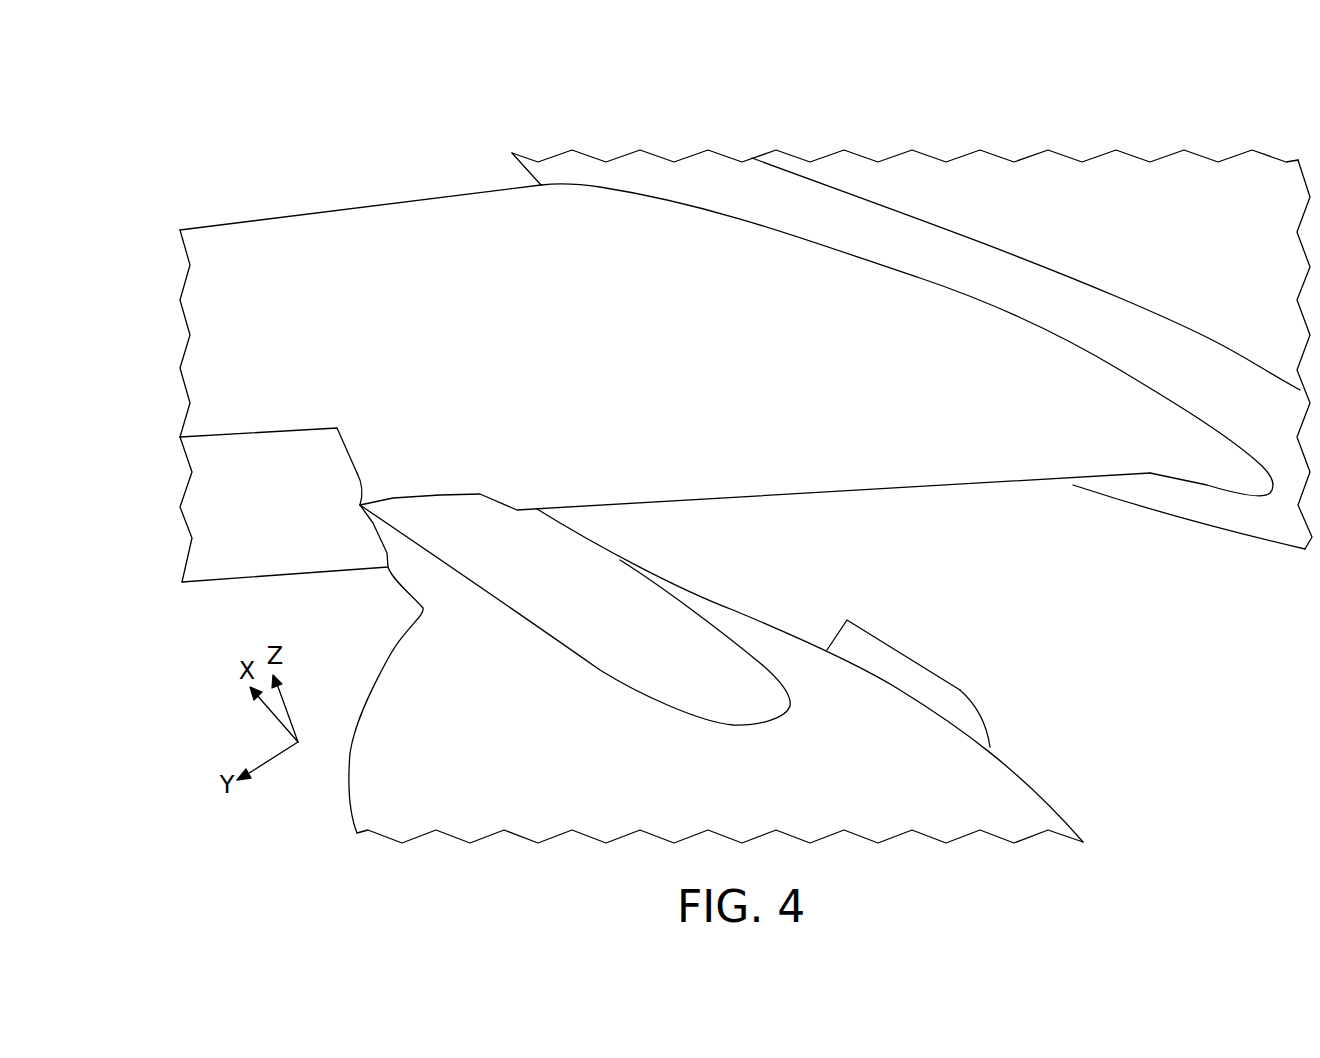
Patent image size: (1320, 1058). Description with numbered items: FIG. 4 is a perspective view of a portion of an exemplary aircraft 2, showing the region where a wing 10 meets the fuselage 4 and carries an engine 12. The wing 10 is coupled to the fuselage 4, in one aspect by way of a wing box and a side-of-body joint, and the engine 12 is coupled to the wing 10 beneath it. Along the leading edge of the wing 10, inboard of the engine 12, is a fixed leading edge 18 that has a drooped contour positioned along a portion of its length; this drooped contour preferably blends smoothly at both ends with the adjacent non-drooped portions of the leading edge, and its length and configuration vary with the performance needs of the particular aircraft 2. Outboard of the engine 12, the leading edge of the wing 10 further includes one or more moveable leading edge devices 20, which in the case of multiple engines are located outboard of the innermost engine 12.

The aircraft 2 is at (116, 66).
The fuselage 4 is at (1189, 247).
The wing 10 is at (314, 248).
The engine 12 is at (1033, 793).
The fixed leading edge 18 is at (787, 473).
The moveable leading edge device 20 is at (290, 535).